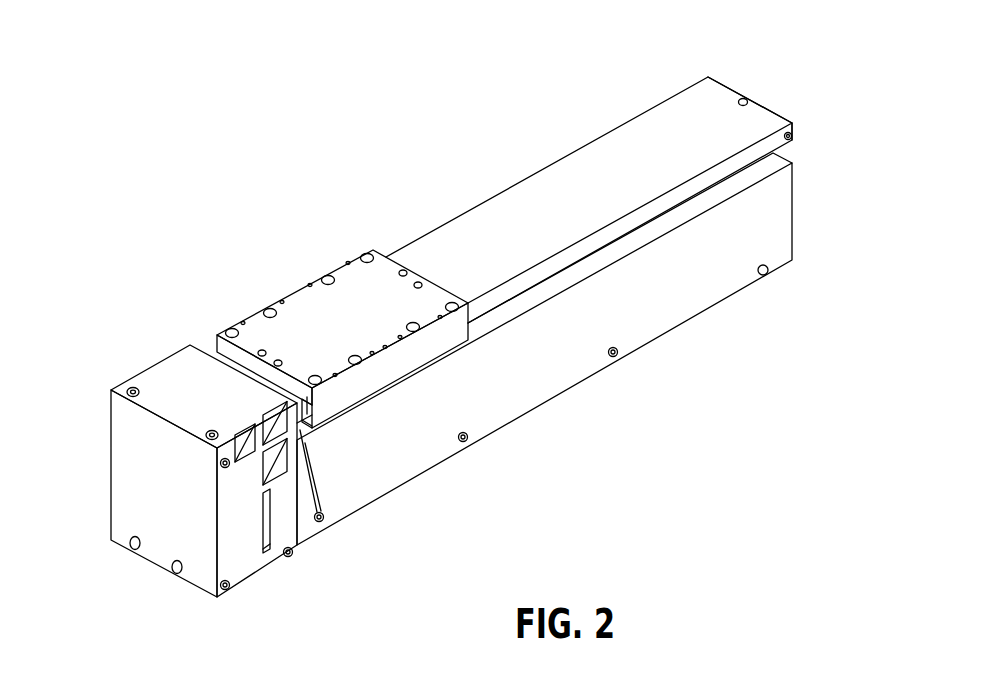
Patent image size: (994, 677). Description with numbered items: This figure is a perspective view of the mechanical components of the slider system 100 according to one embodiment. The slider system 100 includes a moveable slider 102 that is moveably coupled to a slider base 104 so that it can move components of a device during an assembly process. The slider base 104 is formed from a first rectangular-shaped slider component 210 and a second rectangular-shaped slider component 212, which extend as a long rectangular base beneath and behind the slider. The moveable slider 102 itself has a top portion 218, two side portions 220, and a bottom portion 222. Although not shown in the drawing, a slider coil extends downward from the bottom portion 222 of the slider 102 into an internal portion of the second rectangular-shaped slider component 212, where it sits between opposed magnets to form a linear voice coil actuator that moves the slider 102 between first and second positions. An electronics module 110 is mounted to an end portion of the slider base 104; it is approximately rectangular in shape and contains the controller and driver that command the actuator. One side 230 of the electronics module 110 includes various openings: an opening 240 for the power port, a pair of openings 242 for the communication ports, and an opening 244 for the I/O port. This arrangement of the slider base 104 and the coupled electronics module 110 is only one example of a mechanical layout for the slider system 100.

The slider system 100 is at (214, 190).
The moveable slider 102 is at (373, 270).
The slider base 104 is at (714, 91).
The electronics module 110 is at (158, 375).
The first rectangular-shaped slider component 210 is at (570, 172).
The second rectangular-shaped slider component 212 is at (682, 334).
The top portion 218 is at (337, 270).
The side portions 220 is at (216, 338).
The bottom portion 222 is at (305, 437).
The side 230 is at (237, 575).
The opening 240 is at (291, 548).
The pair of openings 242 is at (323, 521).
The opening 244 is at (243, 433).